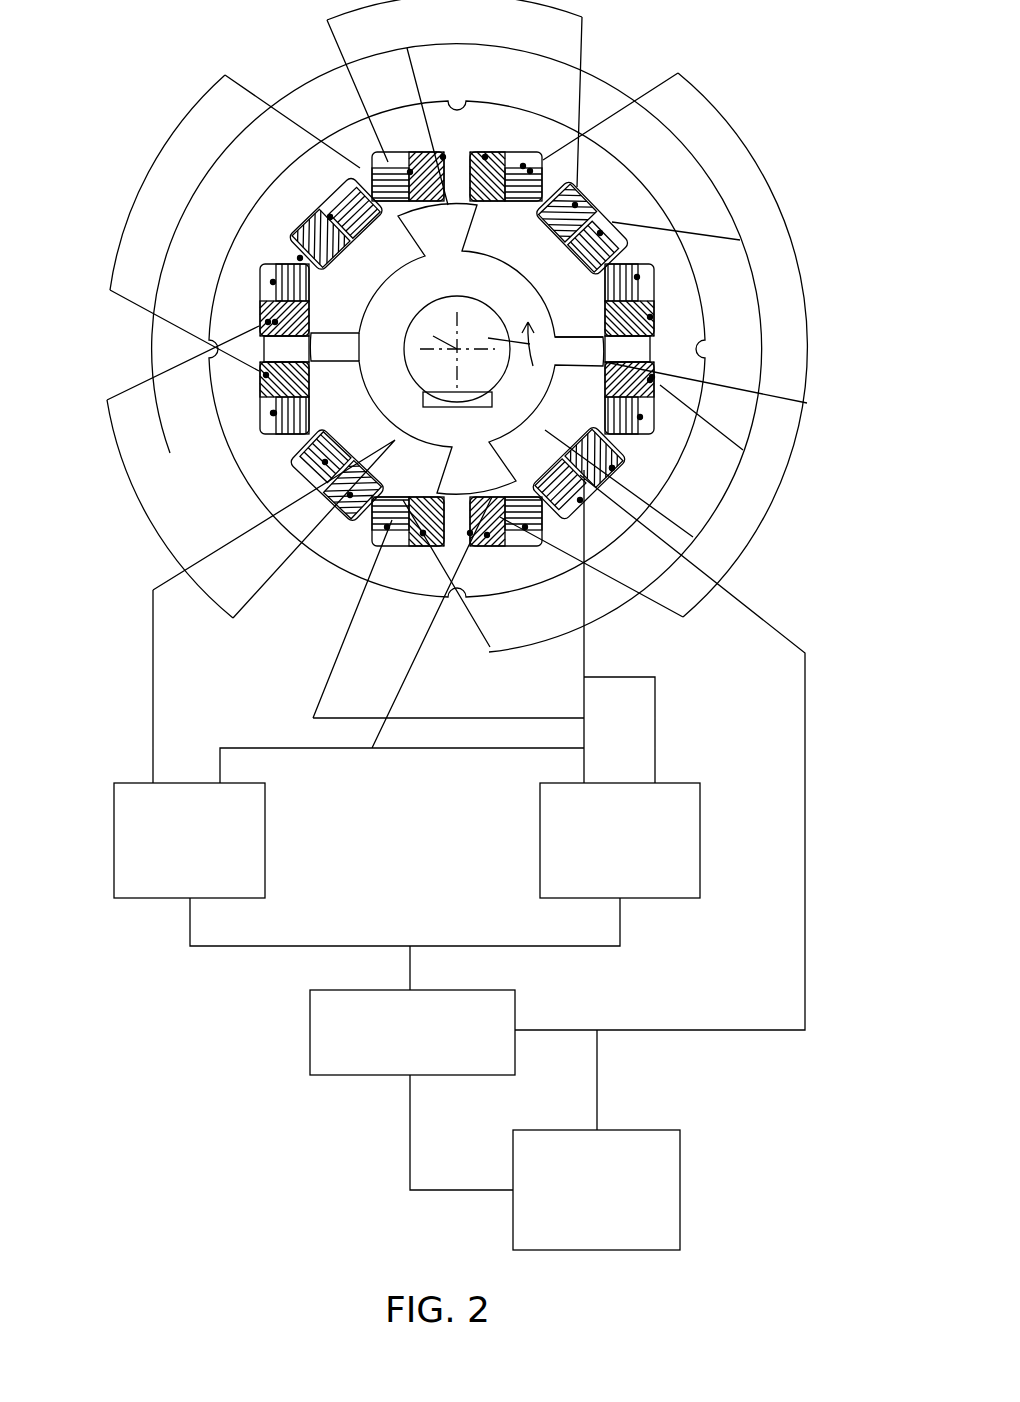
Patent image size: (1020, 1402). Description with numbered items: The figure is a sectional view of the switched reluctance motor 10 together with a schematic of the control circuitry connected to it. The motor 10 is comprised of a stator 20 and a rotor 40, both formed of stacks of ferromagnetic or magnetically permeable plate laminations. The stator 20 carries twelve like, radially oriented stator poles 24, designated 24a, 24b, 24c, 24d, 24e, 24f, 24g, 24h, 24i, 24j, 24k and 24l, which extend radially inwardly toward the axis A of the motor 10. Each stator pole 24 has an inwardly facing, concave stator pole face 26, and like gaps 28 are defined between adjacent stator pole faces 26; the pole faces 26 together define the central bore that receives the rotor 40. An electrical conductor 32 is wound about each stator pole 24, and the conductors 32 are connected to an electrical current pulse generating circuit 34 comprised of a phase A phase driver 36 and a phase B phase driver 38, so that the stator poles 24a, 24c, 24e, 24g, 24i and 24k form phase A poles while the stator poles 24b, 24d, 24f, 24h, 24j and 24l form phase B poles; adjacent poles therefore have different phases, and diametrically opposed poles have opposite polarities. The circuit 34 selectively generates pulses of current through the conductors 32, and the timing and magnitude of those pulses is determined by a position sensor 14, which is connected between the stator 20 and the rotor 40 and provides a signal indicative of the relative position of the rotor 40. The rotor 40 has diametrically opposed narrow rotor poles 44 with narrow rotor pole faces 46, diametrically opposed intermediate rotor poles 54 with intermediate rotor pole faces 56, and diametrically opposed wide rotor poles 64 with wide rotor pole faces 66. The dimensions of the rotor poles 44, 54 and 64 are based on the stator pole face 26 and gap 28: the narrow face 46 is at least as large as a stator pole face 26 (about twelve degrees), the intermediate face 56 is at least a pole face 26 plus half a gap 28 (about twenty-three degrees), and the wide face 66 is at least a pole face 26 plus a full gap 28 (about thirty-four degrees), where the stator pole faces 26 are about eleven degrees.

The motor 10 is at (767, 95).
The position sensor 14 is at (458, 407).
The stator 20 is at (715, 271).
The stator poles 24 is at (443, 326).
The stator pole 24a is at (485, 157).
The stator pole 24b is at (575, 205).
The stator pole 24c is at (637, 277).
The stator pole 24d is at (664, 344).
The stator pole 24e is at (640, 417).
The stator pole 24f is at (577, 500).
The stator pole 24g is at (470, 533).
The stator pole 24h is at (350, 495).
The stator pole 24i is at (272, 418).
The stator pole 24j is at (267, 335).
The stator pole 24k is at (280, 264).
The stator pole 24l is at (338, 192).
The stator pole face 26 is at (320, 277).
The gap 28 is at (318, 330).
The electrical conductor 32 is at (523, 166).
The electrical current pulse generating circuit 34 is at (459, 860).
The phase A phase driver 36 is at (265, 852).
The phase B phase driver 38 is at (700, 842).
The rotor 40 is at (570, 322).
The narrow rotor poles 44 is at (652, 377).
The narrow rotor pole face 46 is at (275, 322).
The intermediate rotor poles 54 is at (330, 217).
The intermediate rotor pole face 56 is at (612, 468).
The wide rotor poles 64 is at (530, 171).
The wide rotor pole face 66 is at (423, 533).